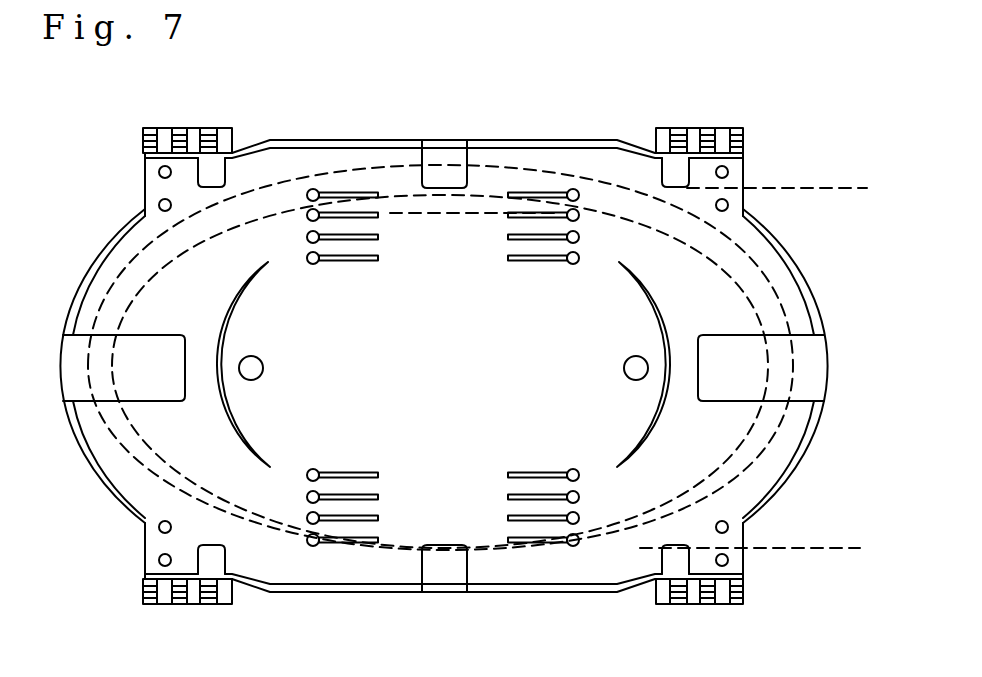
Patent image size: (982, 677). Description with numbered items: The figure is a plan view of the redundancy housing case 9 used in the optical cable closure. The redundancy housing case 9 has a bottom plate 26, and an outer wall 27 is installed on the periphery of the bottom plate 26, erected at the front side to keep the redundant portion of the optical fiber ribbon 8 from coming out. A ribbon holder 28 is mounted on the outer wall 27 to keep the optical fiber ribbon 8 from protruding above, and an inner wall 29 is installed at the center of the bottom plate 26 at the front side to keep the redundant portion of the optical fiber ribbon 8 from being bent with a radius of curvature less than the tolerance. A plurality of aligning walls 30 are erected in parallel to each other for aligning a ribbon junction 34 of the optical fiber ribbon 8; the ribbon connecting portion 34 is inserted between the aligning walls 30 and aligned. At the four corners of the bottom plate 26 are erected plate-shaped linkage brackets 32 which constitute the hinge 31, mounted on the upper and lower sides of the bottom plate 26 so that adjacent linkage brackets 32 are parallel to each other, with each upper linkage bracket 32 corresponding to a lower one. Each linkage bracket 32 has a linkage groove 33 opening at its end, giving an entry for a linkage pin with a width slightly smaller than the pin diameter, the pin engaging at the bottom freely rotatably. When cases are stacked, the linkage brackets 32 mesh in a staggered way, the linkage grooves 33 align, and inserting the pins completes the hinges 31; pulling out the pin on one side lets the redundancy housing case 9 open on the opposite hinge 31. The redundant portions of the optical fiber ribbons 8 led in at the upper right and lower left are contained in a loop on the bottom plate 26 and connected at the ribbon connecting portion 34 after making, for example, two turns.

The optical fiber ribbon 8 is at (802, 190).
The redundancy housing case 9 is at (795, 253).
The bottom plate 26 is at (713, 300).
The outer wall 27 is at (790, 483).
The ribbon holder 28 is at (445, 175).
The inner wall 29 is at (233, 313).
The aligning wall 30 is at (355, 237).
The hinge 31 is at (141, 141).
The linkage bracket 32 is at (210, 128).
The linkage groove 33 is at (152, 140).
The ribbon junction 34 is at (430, 214).